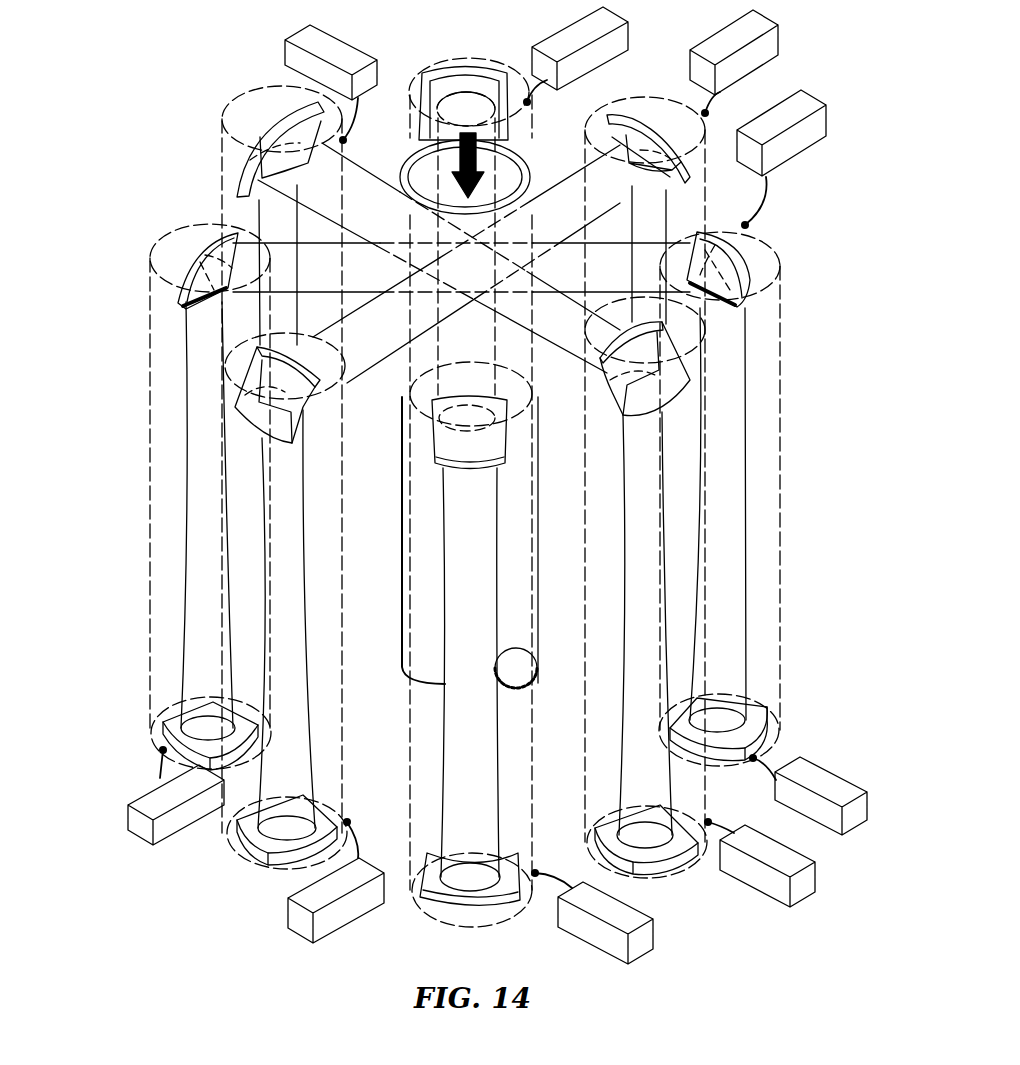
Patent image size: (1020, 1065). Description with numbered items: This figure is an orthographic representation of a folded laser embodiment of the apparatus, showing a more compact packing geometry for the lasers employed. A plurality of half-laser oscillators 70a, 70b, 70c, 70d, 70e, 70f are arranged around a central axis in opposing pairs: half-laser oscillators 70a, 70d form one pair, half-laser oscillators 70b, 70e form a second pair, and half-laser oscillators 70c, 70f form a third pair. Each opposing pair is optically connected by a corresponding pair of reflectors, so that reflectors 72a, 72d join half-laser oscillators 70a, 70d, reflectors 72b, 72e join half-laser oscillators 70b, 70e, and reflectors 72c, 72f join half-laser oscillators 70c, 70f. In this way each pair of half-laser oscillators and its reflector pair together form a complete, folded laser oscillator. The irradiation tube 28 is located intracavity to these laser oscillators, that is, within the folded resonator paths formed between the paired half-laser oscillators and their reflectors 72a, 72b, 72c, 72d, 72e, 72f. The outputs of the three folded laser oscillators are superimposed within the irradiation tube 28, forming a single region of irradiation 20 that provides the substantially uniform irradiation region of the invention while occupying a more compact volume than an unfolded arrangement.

The region of irradiation 20 is at (466, 264).
The irradiation tube 28 is at (396, 626).
The half-laser oscillator 70a is at (641, 884).
The half-laser oscillator 70b is at (786, 575).
The half-laser oscillator 70c is at (714, 135).
The half-laser oscillator 70d is at (219, 141).
The half-laser oscillator 70e is at (149, 316).
The half-laser oscillator 70f is at (215, 531).
The reflector 72a is at (641, 373).
The reflector 72b is at (738, 270).
The reflector 72c is at (645, 125).
The reflector 72d is at (278, 115).
The reflector 72e is at (190, 252).
The reflector 72f is at (250, 425).